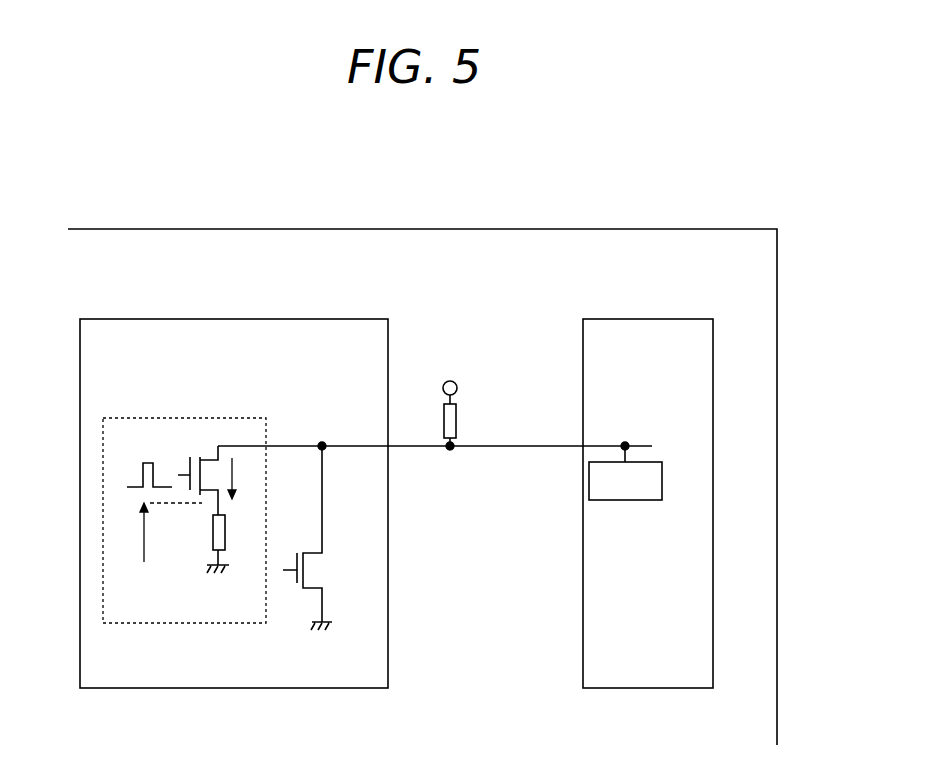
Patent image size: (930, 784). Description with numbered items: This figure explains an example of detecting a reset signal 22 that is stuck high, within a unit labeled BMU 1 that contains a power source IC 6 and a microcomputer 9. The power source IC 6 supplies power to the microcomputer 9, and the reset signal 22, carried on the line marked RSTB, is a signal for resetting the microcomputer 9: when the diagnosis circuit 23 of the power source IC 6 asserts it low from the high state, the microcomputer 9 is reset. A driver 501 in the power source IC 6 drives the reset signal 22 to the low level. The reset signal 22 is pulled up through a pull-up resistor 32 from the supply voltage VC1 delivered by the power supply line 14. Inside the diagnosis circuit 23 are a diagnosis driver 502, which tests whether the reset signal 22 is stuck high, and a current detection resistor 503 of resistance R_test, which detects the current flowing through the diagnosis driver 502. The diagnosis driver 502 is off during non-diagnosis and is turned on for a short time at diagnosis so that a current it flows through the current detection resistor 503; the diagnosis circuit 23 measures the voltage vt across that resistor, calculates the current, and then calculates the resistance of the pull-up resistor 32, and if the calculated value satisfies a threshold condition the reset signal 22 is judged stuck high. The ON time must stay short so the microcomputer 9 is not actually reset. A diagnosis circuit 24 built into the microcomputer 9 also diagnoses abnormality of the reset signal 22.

The battery management unit (BMU) 1 is at (438, 229).
The power source IC 6 is at (357, 319).
The microcomputer 9 is at (700, 319).
The power supply line 14 is at (458, 385).
The reset signal 22 is at (552, 447).
The diagnosis circuit 23 is at (193, 418).
The diagnosis circuit 24 is at (638, 500).
The pull-up resistor 32 is at (440, 428).
The driver 501 is at (325, 558).
The diagnosis driver 502 is at (188, 460).
The current detection resistor 503 is at (226, 533).